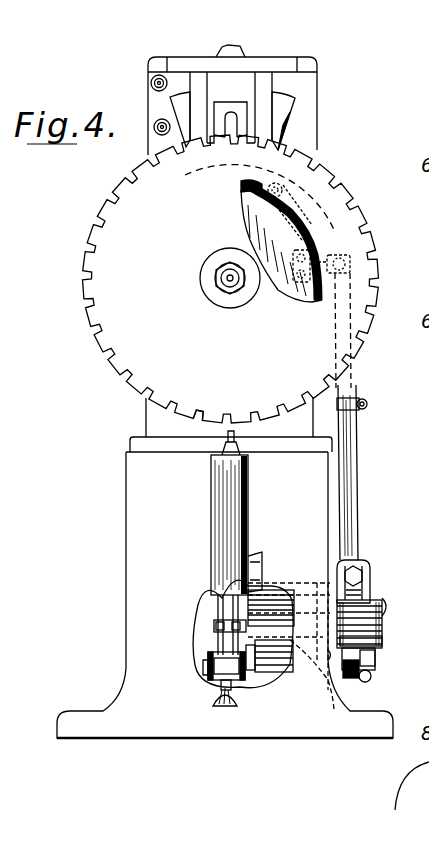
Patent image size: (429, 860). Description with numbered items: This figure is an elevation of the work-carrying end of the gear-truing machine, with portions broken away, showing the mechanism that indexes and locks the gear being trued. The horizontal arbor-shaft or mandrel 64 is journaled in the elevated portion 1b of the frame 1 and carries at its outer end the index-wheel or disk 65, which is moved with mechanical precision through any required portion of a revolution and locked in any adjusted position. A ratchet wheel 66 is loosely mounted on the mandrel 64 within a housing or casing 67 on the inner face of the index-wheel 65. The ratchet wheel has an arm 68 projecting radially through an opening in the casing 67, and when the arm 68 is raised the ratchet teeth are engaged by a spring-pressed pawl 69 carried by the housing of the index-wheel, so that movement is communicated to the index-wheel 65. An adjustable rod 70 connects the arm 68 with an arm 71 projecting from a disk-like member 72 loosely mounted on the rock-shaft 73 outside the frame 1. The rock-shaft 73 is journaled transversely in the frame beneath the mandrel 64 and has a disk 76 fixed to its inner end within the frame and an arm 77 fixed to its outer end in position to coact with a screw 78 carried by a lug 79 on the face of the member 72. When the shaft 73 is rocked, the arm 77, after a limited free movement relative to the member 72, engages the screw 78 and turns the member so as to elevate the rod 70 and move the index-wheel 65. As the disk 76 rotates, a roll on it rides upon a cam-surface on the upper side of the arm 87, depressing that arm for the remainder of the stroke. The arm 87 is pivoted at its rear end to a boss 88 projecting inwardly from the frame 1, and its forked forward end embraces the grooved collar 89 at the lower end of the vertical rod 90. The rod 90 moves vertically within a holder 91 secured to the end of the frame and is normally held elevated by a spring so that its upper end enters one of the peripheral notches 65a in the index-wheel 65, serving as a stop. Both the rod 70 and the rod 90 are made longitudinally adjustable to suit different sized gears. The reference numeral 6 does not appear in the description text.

The frame 1 is at (225, 595).
The elevated portion of the frame 1b is at (153, 416).
The head frame 6 is at (268, 107).
The arbor-shaft or mandrel 64 is at (229, 279).
The index-wheel or disk 65 is at (231, 279).
The peripheral notches 65a is at (208, 410).
The ratchet wheel 66 is at (276, 232).
The housing or casing 67 is at (243, 186).
The arm 68 is at (322, 262).
The spring-pressed pawl 69 is at (300, 214).
The adjustable rod 70 is at (353, 448).
The arm 71 is at (370, 586).
The disk-like member 72 is at (374, 639).
The rock-shaft 73 is at (384, 606).
The disk 76 is at (240, 612).
The arm 77 is at (370, 604).
The screw 78 is at (369, 679).
The lug 79 is at (376, 660).
The arm 87 is at (209, 668).
The boss 88 is at (272, 655).
The grooved collar 89 is at (237, 672).
The vertical rod 90 is at (220, 640).
The holder 91 is at (236, 510).